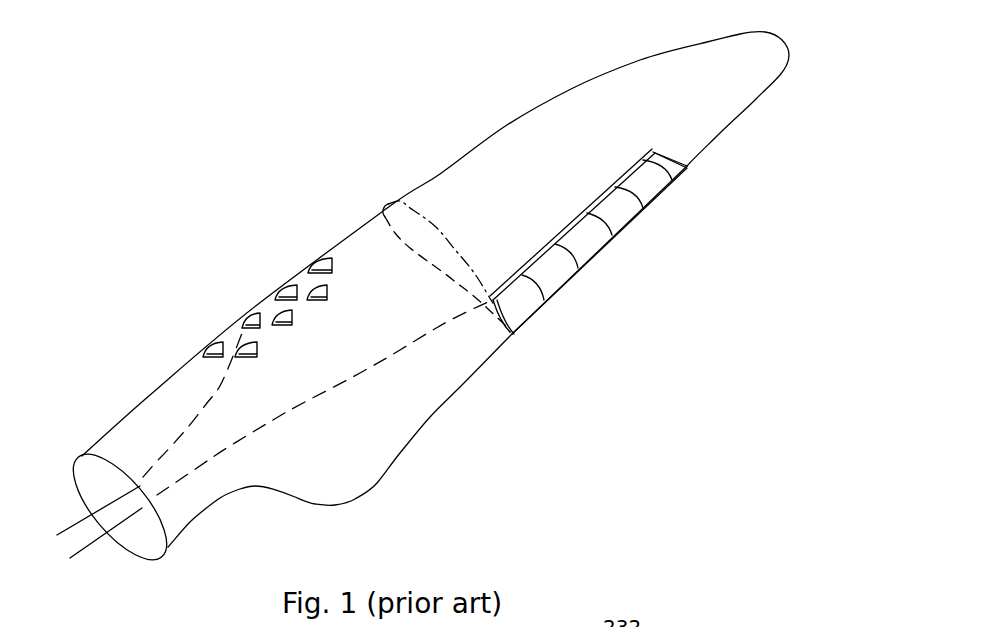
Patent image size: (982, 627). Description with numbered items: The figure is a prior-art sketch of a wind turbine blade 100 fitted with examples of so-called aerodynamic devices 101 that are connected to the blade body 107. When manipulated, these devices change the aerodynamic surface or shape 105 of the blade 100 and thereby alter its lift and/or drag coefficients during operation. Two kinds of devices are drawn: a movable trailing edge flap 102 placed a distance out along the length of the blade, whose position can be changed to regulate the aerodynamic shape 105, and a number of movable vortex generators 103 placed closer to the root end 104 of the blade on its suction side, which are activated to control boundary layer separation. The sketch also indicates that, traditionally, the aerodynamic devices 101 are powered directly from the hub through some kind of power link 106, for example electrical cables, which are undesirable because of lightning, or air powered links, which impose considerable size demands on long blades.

The wind turbine blade 100 is at (152, 357).
The aerodynamic devices 101 is at (455, 253).
The movable trailing edge flap 102 is at (613, 218).
The movable vortex generators 103 is at (290, 293).
The root end 104 is at (225, 438).
The aerodynamic surface or shape 105 is at (438, 365).
The power link 106 is at (57, 535).
The blade body 107 is at (653, 137).